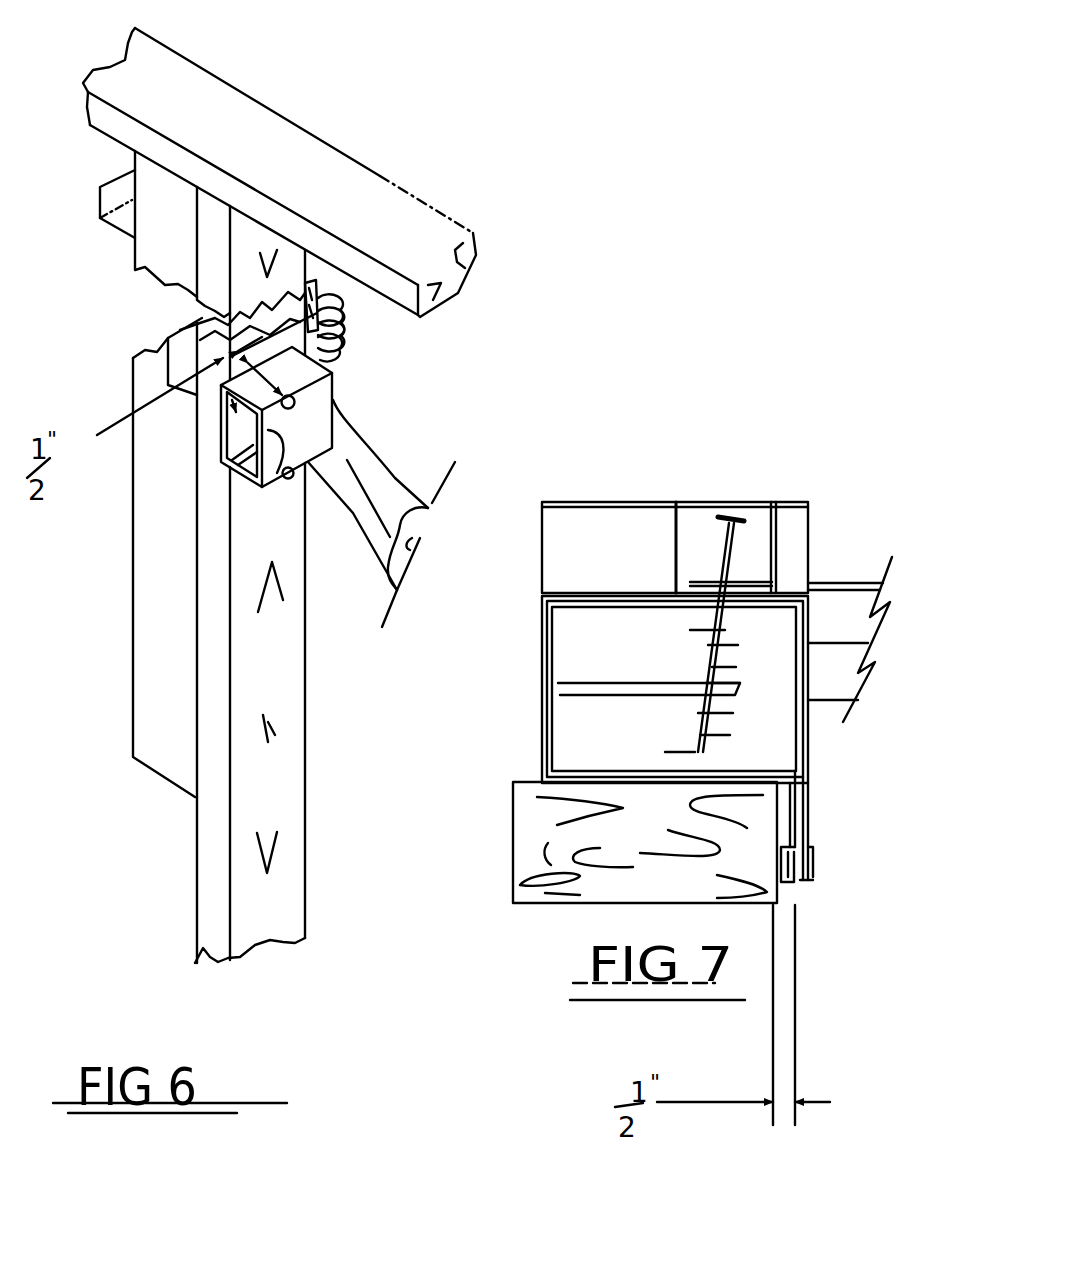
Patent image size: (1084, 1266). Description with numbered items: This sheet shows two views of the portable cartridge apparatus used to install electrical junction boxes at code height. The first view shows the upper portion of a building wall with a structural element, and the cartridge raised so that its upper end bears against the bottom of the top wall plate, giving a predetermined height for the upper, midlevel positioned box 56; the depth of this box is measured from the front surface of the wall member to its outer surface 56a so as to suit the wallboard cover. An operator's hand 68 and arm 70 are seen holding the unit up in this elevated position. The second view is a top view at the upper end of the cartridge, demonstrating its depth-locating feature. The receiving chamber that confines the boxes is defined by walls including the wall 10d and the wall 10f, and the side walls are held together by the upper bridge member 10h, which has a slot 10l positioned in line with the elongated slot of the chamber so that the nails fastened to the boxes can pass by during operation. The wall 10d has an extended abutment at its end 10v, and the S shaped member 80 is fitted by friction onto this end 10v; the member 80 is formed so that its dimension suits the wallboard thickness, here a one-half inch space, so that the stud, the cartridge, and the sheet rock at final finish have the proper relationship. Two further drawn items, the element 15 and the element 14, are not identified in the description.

In FIG. 6, the retaining clip 15 is at (317, 297).
In FIG. 6, the operator's hand 68 is at (340, 343).
In FIG. 6, the operator's arm 70 is at (372, 448).
In FIG. 6, the upper junction box 56 is at (272, 487).
In FIG. 6, the outer surface of box 56a is at (221, 435).
In FIG. 7, the upper bridge member 10h is at (595, 500).
In FIG. 7, the slot 10l is at (750, 553).
In FIG. 7, the wall 10f is at (542, 672).
In FIG. 7, the wall 10d is at (808, 736).
In FIG. 7, the end of wall 10v is at (808, 832).
In FIG. 7, the wood stud 14 is at (542, 862).
In FIG. 7, the S shaped member 80 is at (803, 890).